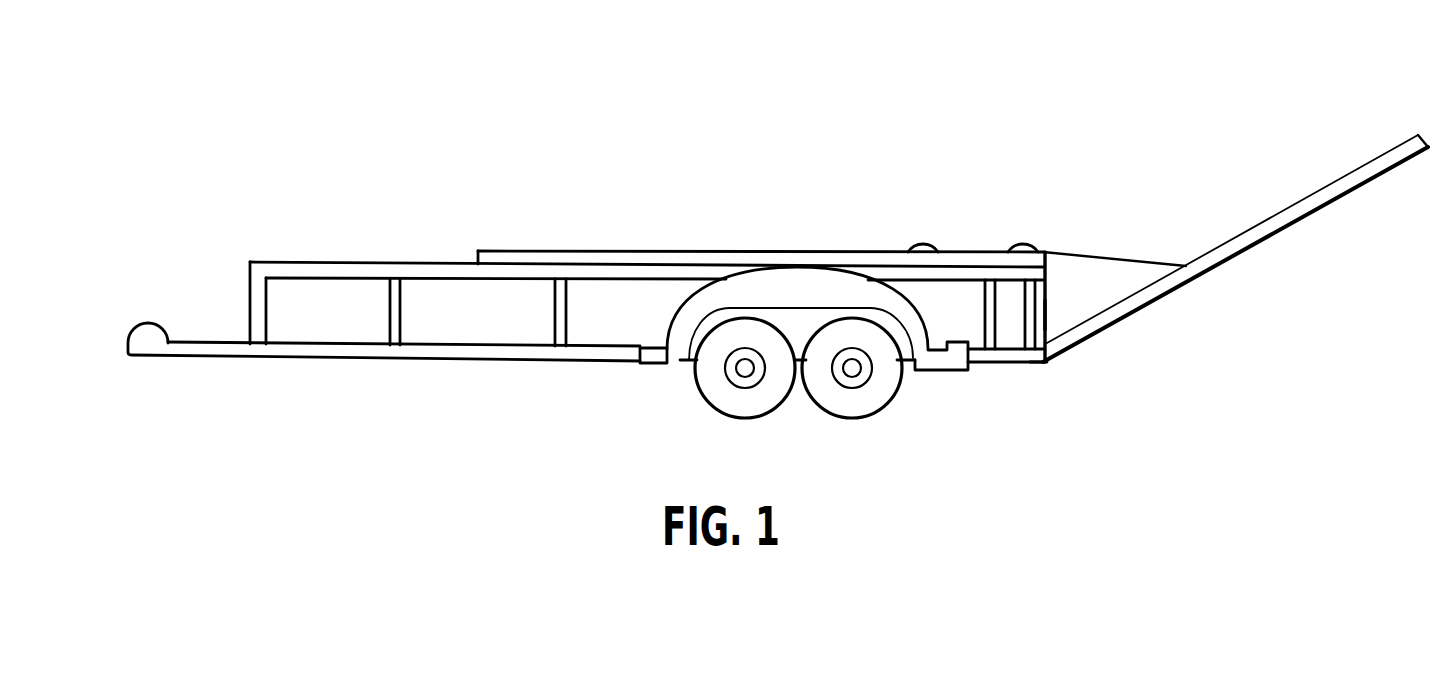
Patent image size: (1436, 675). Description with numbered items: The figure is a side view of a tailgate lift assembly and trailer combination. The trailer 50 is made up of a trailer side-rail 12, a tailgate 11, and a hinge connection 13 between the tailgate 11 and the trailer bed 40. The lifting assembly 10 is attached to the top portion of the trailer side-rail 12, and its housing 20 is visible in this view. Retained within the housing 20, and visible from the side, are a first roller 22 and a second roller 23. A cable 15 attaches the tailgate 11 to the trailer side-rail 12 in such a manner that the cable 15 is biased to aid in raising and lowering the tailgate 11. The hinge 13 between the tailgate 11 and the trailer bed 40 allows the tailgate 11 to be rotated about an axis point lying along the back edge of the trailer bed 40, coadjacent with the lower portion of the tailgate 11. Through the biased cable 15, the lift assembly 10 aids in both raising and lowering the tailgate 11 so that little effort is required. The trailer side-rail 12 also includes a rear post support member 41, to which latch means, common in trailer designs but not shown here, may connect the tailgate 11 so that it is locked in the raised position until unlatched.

The lifting assembly 10 is at (768, 150).
The trailer 50 is at (651, 89).
The tailgate 11 is at (1353, 190).
The trailer side-rail 12 is at (352, 263).
The hinge connection 13 is at (1046, 362).
The cable 15 is at (1120, 260).
The housing 20 is at (487, 251).
The first roller 22 is at (923, 246).
The second roller 23 is at (1022, 246).
The trailer bed 40 is at (302, 344).
The rear post support member 41 is at (1046, 312).